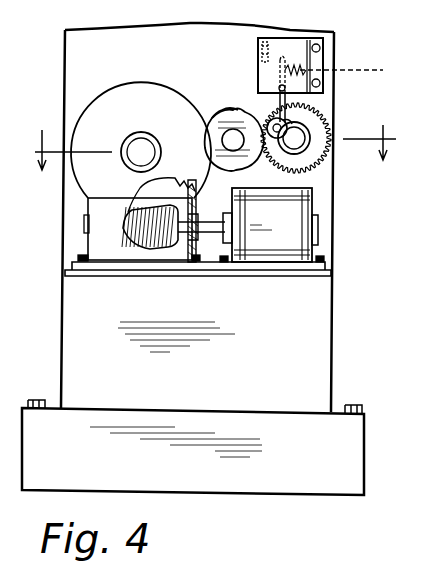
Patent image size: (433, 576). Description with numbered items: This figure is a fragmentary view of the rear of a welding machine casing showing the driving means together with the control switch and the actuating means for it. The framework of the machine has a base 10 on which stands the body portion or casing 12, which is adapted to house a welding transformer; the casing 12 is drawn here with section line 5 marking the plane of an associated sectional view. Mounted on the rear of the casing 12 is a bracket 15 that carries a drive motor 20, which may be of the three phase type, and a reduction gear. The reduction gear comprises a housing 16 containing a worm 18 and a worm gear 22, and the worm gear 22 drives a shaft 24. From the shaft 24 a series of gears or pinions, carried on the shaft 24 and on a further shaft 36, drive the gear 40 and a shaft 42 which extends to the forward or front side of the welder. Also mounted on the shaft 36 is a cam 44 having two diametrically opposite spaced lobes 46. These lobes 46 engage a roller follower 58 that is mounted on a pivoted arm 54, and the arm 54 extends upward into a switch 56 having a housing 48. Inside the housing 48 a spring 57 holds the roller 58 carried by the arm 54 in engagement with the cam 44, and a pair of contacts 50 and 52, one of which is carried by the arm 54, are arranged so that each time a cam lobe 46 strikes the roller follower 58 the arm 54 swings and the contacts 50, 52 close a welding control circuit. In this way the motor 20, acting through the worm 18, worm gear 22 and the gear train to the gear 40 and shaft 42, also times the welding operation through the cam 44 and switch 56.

The section line 5 is at (211, 147).
The base 10 is at (158, 430).
The casing 12 is at (80, 62).
The bracket 15 is at (213, 270).
The housing 16 is at (93, 194).
The worm 18 is at (152, 236).
The drive motor 20 is at (272, 240).
The worm gear 22 is at (172, 190).
The shaft 24 is at (143, 144).
The shaft 36 is at (214, 118).
The gear 40 is at (308, 167).
The shaft 42 is at (306, 148).
The cam 44 is at (222, 108).
The cam lobes 46 is at (252, 112).
The switch housing 48 is at (305, 63).
The contact 50 is at (276, 48).
The contact 52 is at (286, 46).
The pivoted arm 54 is at (284, 110).
The switch 56 is at (300, 37).
The spring 57 is at (351, 73).
The roller follower 58 is at (292, 124).